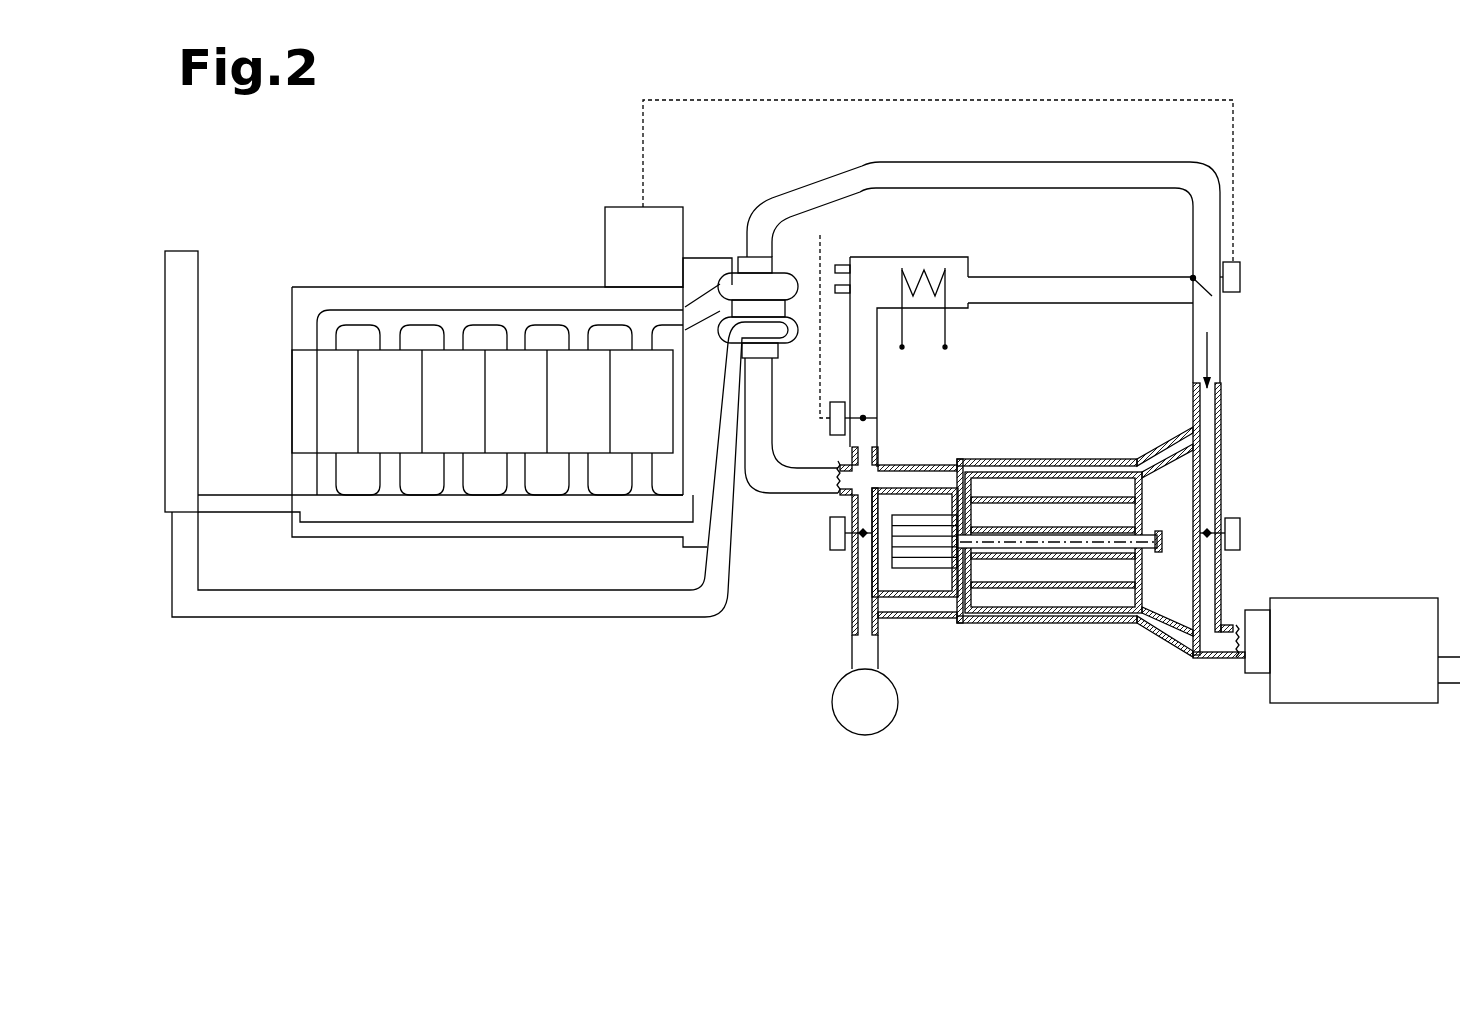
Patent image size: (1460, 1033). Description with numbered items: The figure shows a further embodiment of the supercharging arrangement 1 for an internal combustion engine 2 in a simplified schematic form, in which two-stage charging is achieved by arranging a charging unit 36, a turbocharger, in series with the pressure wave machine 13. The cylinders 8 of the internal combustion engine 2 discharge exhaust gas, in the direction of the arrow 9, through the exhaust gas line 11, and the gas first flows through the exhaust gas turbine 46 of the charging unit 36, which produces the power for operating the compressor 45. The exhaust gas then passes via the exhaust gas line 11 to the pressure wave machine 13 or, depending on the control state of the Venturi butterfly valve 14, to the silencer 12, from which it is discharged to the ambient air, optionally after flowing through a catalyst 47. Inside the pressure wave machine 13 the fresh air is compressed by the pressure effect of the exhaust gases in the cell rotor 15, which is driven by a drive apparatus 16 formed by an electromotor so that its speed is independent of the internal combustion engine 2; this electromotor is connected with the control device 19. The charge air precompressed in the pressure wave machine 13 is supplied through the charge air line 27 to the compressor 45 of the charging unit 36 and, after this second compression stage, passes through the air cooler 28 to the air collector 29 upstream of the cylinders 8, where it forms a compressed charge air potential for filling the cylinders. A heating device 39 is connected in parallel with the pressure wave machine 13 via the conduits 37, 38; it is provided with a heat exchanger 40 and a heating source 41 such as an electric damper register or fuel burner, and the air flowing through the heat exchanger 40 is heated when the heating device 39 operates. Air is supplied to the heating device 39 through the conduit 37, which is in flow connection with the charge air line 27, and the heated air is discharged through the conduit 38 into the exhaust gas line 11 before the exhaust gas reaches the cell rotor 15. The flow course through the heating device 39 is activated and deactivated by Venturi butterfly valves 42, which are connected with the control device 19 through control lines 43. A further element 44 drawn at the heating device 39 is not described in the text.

The supercharging arrangement 1 is at (1263, 448).
The internal combustion engine 2 is at (420, 255).
The cylinders 8 is at (313, 410).
The arrow (exhaust gas flow) 9 is at (1217, 350).
The exhaust gas line 11 is at (1215, 327).
The silencer 12 is at (1325, 690).
The pressure wave machine 13 is at (1012, 640).
The Venturi butterfly valves 14 is at (1253, 505).
The cell rotor 15 is at (1087, 593).
The drive apparatus 16 is at (922, 577).
The control device 19 is at (622, 228).
The charge air line 27 is at (790, 482).
The air cooler 28 is at (183, 283).
The air collector 29 is at (332, 506).
The charging unit 36 is at (730, 225).
The conduit 37 is at (863, 363).
The conduit 38 is at (1127, 290).
The heating device 39 is at (1008, 257).
The heat exchanger 40 is at (880, 268).
The heating source 41 is at (930, 272).
The Venturi butterfly valves 42 is at (897, 418).
The control lines 43 is at (818, 352).
The electrical connector 44 is at (850, 270).
The compressor 45 is at (715, 340).
The exhaust gas turbine 46 is at (783, 285).
The catalyst 47 is at (1257, 660).